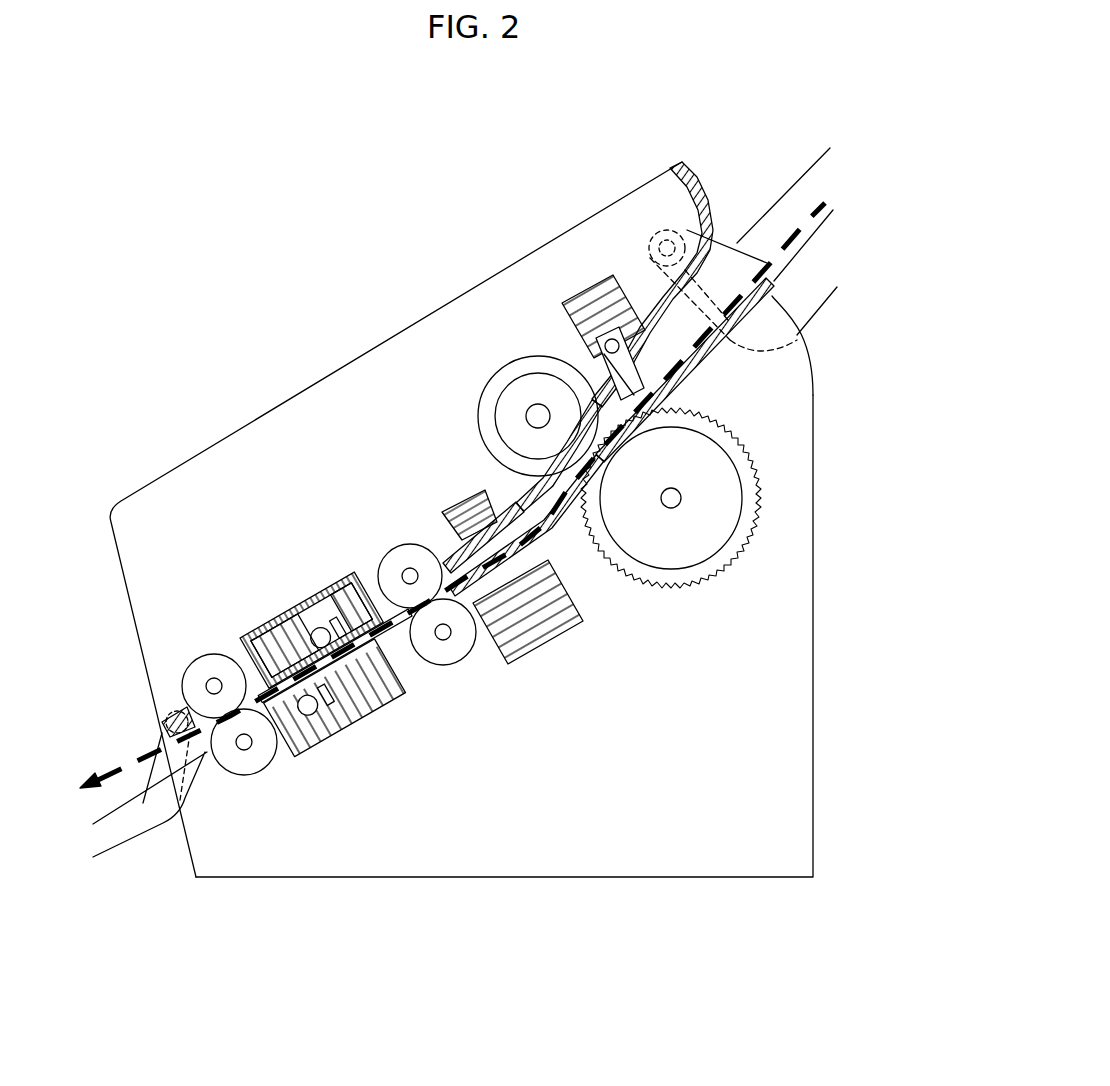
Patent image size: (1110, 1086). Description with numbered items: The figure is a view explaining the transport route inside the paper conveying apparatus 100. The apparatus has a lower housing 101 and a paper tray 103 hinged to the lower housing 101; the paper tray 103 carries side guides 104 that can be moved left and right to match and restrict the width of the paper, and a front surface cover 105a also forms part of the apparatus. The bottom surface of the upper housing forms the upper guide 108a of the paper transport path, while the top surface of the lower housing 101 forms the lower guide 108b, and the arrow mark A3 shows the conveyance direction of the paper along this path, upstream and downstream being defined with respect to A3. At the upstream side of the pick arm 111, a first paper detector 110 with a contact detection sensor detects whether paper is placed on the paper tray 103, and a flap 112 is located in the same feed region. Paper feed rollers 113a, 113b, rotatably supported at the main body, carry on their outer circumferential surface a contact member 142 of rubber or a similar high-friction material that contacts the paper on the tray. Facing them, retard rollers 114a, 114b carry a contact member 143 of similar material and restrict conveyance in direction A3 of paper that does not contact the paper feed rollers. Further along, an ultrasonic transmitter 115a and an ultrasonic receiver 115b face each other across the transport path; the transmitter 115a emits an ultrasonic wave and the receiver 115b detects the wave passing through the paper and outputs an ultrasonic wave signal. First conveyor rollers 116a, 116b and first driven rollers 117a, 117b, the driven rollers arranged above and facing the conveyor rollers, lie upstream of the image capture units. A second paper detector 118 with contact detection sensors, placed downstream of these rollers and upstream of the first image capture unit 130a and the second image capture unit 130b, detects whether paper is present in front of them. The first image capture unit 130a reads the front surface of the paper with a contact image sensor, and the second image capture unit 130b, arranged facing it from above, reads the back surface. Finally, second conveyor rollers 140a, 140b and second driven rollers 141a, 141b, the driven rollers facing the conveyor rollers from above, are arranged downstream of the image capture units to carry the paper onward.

The paper conveying apparatus 100 is at (168, 186).
The lower housing 101 is at (752, 845).
The paper tray 103 is at (812, 317).
The side guide 104 is at (797, 200).
The front surface cover 105a is at (107, 843).
The upper guide 108a is at (505, 492).
The lower guide 108b is at (725, 352).
The first paper detector 110 is at (658, 303).
The pick arm 111 is at (605, 302).
The flap 112 is at (612, 335).
The paper feed roller 113a is at (703, 536).
The paper feed roller 113b is at (707, 533).
The retard roller 114a is at (475, 352).
The retard roller 114b is at (527, 400).
The ultrasonic transmitter 115a is at (470, 500).
The ultrasonic receiver 115b is at (555, 638).
The first conveyor roller 116a is at (568, 754).
The first conveyor roller 116b is at (507, 667).
The first driven roller 117a is at (328, 447).
The first driven roller 117b is at (418, 553).
The second paper detector 118 is at (393, 559).
The first image capture unit 130a is at (340, 722).
The second image capture unit 130b is at (330, 612).
The second conveyor roller 140a is at (336, 753).
The second conveyor roller 140b is at (263, 747).
The second driven roller 141a is at (177, 601).
The second driven roller 141b is at (207, 667).
The contact member 142 is at (647, 573).
The contact member 143 is at (533, 357).
The conveyance direction A3 is at (442, 495).